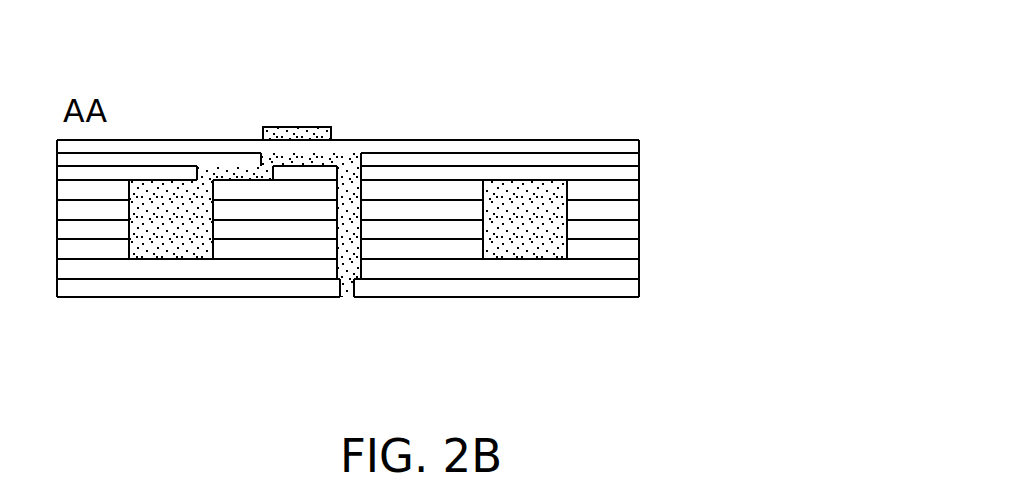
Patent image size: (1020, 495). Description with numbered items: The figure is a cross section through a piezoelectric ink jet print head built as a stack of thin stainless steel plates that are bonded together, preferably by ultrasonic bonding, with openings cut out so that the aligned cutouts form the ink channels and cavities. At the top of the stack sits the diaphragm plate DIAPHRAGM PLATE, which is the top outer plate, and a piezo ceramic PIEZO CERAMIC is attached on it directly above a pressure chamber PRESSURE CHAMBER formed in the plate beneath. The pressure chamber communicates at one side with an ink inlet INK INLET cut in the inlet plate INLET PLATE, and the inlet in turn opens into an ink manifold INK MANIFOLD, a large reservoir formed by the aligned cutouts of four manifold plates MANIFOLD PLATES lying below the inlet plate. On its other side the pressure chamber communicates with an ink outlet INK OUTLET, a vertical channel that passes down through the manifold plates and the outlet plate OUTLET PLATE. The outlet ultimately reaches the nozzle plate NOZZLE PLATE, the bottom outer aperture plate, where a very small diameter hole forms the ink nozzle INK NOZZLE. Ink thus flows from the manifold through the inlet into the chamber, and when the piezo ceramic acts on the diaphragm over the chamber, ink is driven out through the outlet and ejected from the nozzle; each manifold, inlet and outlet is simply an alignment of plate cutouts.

The piezoelectric ceramic PIEZO CERAMIC is at (293, 127).
The pressure chamber PRESSURE CHAMBER is at (296, 161).
The diaphragm plate DIAPHRAGM PLATE is at (642, 146).
The inlet plate INLET PLATE is at (642, 173).
The manifold plates MANIFOLD PLATES is at (648, 189).
The outlet plate OUTLET PLATE is at (642, 269).
The nozzle plate NOZZLE PLATE is at (642, 288).
The ink manifold INK MANIFOLD is at (193, 243).
The ink inlet INK INLET is at (249, 177).
The ink outlet INK OUTLET is at (350, 227).
The ink nozzle INK NOZZLE is at (347, 297).